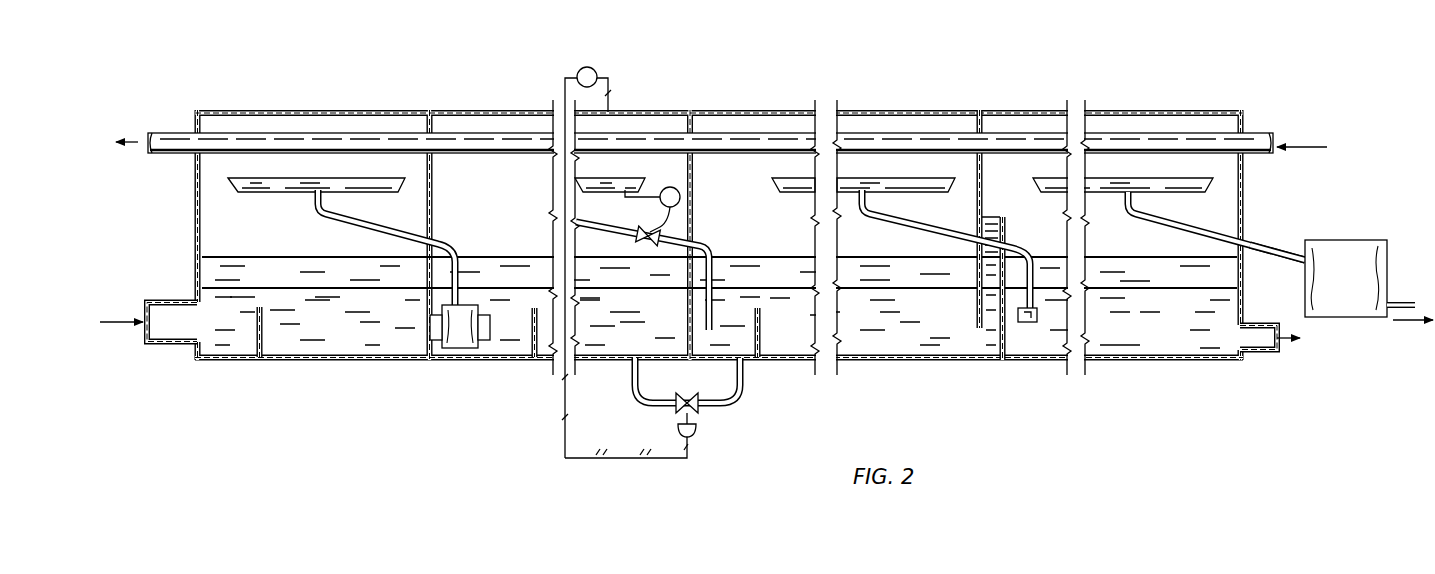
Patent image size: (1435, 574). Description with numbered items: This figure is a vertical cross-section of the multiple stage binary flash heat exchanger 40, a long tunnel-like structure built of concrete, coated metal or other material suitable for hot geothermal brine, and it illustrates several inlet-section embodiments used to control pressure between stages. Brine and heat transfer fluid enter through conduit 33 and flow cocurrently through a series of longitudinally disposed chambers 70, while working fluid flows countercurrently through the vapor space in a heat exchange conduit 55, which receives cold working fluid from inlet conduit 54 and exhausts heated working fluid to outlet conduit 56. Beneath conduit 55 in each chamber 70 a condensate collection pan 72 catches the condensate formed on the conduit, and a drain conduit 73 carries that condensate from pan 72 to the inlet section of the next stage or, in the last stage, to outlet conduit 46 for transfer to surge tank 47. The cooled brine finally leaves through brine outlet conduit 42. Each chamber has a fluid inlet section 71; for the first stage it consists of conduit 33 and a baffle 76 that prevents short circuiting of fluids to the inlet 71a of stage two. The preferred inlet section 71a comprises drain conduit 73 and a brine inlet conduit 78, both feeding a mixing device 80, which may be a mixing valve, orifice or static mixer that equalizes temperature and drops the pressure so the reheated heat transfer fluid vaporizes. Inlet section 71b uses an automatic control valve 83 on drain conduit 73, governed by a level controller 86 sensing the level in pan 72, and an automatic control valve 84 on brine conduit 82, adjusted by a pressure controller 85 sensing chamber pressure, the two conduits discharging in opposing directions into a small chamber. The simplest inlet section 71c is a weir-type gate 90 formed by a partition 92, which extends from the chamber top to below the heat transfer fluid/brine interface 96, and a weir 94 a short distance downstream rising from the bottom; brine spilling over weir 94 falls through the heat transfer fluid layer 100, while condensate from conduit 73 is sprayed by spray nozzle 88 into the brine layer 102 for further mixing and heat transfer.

The conduit 33 is at (165, 306).
The multiple stage binary flash heat exchanger 40 is at (775, 82).
The brine outlet conduit 42 is at (1253, 352).
The outlet conduit 46 is at (1270, 250).
The surge tank 47 is at (1355, 245).
The inlet conduit 54 is at (1265, 135).
The heat exchange conduit 55 is at (452, 138).
The outlet conduit 56 is at (182, 135).
The chamber 70 is at (720, 190).
The fluid inlet section 71 is at (232, 346).
The inlet section 71a is at (522, 348).
The inlet section 71b is at (748, 348).
The inlet section 71c is at (1013, 350).
The condensate collection pan 72 is at (287, 195).
The drain conduit 73 is at (447, 240).
The baffle 76 is at (262, 345).
The brine inlet conduit 78 is at (428, 327).
The mixing device 80 is at (455, 350).
The brine conduit 82 is at (636, 402).
The automatic control valve 83 is at (646, 230).
The automatic control valve 84 is at (695, 432).
The pressure controller 85 is at (596, 70).
The level controller 86 is at (672, 187).
The spray nozzle 88 is at (1028, 322).
The weir-type gate 90 is at (986, 350).
The partition 92 is at (976, 316).
The weir 94 is at (1000, 338).
The heat transfer fluid/brine interface 96 is at (918, 286).
The heat transfer fluid layer 100 is at (350, 284).
The brine layer 102 is at (350, 341).